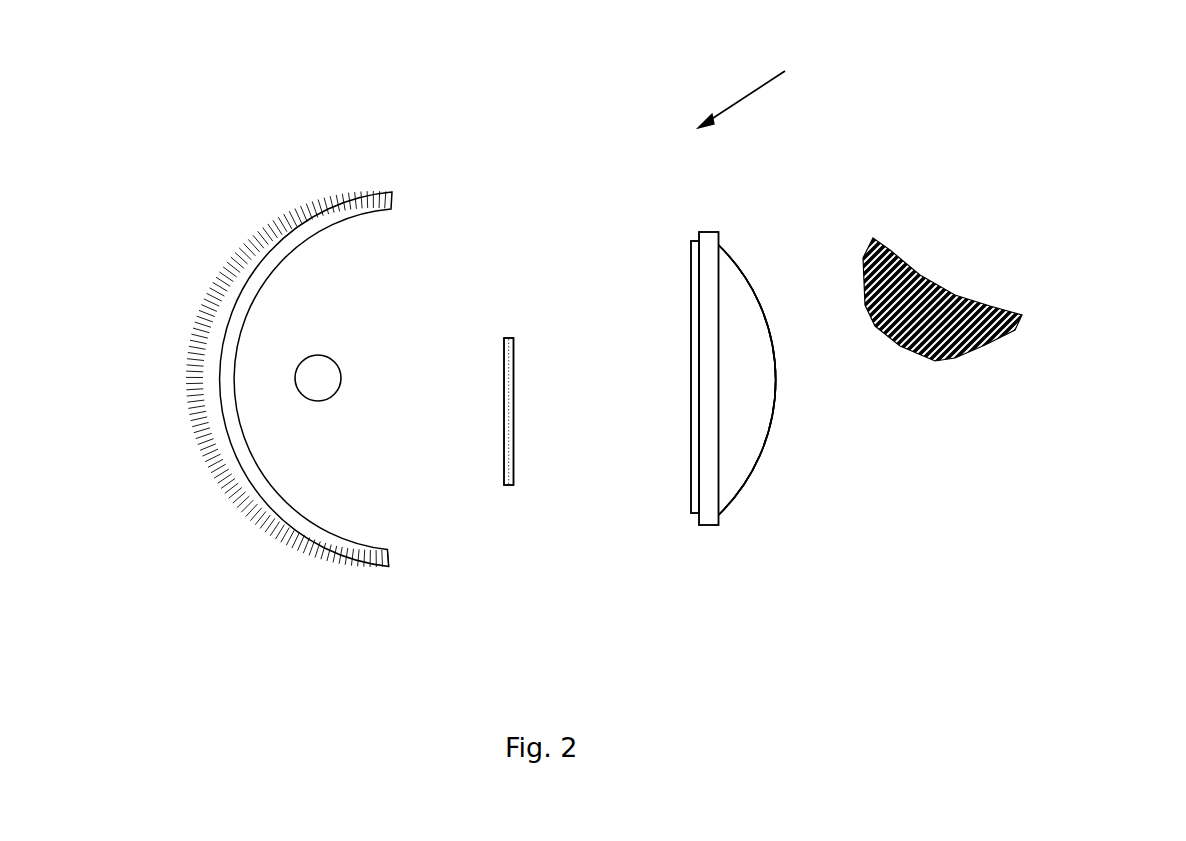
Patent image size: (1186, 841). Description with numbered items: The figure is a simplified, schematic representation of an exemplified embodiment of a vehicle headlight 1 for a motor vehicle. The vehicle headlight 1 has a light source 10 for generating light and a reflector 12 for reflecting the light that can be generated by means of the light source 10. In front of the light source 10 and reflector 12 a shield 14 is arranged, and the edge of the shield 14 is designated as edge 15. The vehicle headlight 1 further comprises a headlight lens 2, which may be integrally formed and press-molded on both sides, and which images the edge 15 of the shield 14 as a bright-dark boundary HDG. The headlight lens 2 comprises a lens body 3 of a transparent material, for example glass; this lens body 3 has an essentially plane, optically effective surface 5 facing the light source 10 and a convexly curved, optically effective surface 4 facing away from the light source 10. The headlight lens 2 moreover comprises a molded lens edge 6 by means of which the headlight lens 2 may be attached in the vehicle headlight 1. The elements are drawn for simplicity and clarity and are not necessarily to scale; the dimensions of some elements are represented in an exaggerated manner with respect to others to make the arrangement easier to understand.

The vehicle headlight 1 is at (754, 86).
The headlight lens 2 is at (746, 238).
The lens body 3 is at (739, 415).
The convexly curved optically effective surface 4 is at (740, 489).
The plane optically effective surface 5 is at (691, 452).
The molded lens edge 6 is at (708, 489).
The light source 10 is at (315, 375).
The reflector 12 is at (287, 235).
The shield 14 is at (510, 437).
The edge of the shield 15 is at (508, 340).
The bright-dark boundary HDG is at (928, 273).